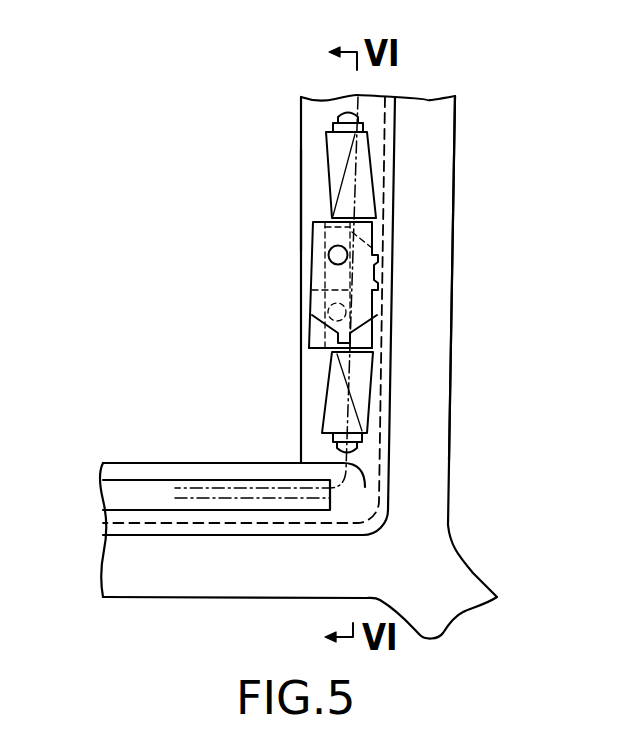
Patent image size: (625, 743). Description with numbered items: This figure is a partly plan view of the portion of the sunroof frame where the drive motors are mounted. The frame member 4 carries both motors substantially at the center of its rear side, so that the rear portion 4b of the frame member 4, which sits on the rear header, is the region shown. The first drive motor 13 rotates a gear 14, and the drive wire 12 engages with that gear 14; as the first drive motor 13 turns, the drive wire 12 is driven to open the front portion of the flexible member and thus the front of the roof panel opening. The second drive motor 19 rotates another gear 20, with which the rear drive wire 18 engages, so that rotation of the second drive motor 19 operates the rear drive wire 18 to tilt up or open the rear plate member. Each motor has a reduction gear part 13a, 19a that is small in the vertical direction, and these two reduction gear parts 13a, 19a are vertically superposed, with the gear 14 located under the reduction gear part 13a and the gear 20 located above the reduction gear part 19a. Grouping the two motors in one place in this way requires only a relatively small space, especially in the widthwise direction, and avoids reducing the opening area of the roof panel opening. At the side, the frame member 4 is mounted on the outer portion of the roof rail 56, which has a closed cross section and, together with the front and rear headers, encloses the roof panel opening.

The frame member 4 is at (301, 136).
The rear portion of the frame member 4b is at (301, 190).
The drive wire 12 is at (301, 463).
The first drive motor 13 is at (370, 395).
The reduction gear part 13a is at (378, 327).
The gear 14 is at (312, 294).
The rear drive wire 18 is at (330, 498).
The second drive motor 19 is at (368, 166).
The reduction gear part 19a is at (312, 263).
The gear 20 is at (347, 253).
The roof rail 56 is at (456, 272).